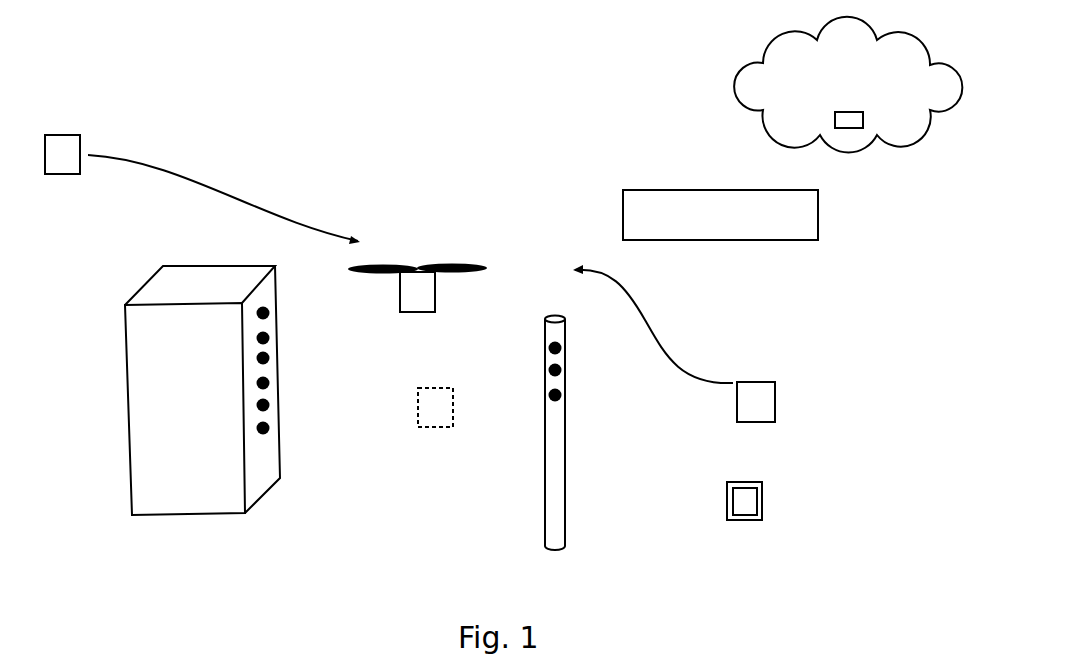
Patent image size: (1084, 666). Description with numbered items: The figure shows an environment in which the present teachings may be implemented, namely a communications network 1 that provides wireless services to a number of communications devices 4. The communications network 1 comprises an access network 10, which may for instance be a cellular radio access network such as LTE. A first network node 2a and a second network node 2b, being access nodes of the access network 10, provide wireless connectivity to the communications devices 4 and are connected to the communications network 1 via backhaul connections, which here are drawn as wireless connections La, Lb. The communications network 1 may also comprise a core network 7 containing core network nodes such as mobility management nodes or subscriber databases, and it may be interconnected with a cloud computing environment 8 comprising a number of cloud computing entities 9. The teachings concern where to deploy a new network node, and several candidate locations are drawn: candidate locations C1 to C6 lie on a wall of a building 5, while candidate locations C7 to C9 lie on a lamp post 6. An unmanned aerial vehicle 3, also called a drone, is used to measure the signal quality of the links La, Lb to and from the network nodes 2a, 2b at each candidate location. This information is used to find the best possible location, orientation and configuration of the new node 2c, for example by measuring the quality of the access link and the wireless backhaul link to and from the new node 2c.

The communications network 1 is at (612, 130).
The access network 10 is at (466, 190).
The unmanned aerial vehicle 3 is at (420, 304).
The first network node 2a is at (760, 414).
The second network node 2b is at (70, 165).
The new node 2c is at (438, 419).
The communications device 4 is at (748, 509).
The building 5 is at (262, 472).
The lamp post 6 is at (557, 520).
The core network 7 is at (817, 230).
The cloud computing environment 8 is at (902, 133).
The cloud computing entity 9 is at (850, 115).
The candidate location C1 is at (268, 310).
The candidate location C6 is at (268, 421).
The candidate location C7 is at (560, 344).
The candidate location C9 is at (562, 396).
The wireless connection La is at (653, 324).
The wireless connection Lb is at (224, 199).